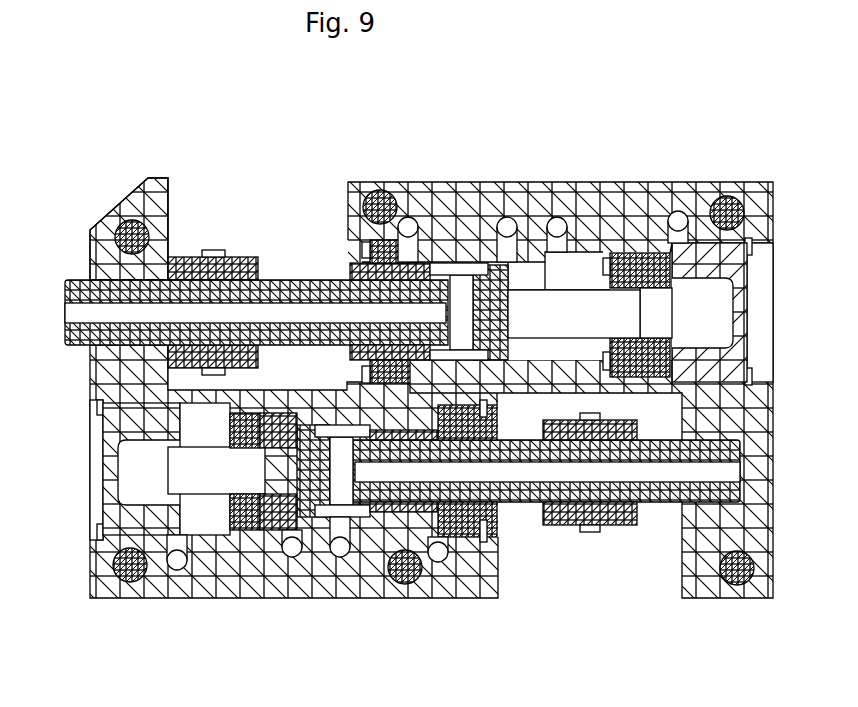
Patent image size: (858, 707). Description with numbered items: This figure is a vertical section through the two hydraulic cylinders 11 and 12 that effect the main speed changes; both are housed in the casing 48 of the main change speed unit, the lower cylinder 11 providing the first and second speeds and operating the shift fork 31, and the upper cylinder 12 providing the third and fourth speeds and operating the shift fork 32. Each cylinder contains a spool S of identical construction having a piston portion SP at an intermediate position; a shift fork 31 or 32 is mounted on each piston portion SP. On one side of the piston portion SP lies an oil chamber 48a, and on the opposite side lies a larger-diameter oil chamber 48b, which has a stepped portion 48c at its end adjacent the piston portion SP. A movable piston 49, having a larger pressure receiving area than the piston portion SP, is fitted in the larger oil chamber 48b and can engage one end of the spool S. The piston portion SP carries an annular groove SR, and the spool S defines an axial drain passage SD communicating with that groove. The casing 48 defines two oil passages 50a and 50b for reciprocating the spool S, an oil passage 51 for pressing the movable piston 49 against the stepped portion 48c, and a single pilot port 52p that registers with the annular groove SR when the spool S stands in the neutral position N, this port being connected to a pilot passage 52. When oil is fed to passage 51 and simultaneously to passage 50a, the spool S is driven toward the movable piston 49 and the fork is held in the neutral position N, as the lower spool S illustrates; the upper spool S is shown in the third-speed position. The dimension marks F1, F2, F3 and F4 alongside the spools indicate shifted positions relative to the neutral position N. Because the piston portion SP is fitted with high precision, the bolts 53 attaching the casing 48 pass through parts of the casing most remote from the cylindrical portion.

The hydraulic cylinder 11 is at (136, 468).
The hydraulic cylinder 12 is at (717, 316).
The shift fork 31 is at (536, 528).
The shift fork 32 is at (185, 255).
The casing 48 is at (92, 565).
The oil chamber 48a is at (395, 262).
The oil chamber 48b is at (583, 257).
The stepped portion 48c is at (560, 372).
The movable piston 49 is at (635, 254).
The oil passage 50a is at (408, 222).
The oil passage 50b is at (558, 224).
The oil passage 51 is at (680, 218).
The pilot passage 52 is at (507, 224).
The pilot port 52p is at (514, 268).
The bolt 53 is at (119, 225).
The spool S is at (324, 280).
The drain passage SD is at (70, 312).
The annular groove SR is at (442, 265).
The piston portion SP is at (480, 262).
The neutral position N is at (257, 243).
The first position F1 is at (543, 568).
The second position F2 is at (543, 535).
The third position F3 is at (213, 243).
The fourth position F4 is at (213, 203).